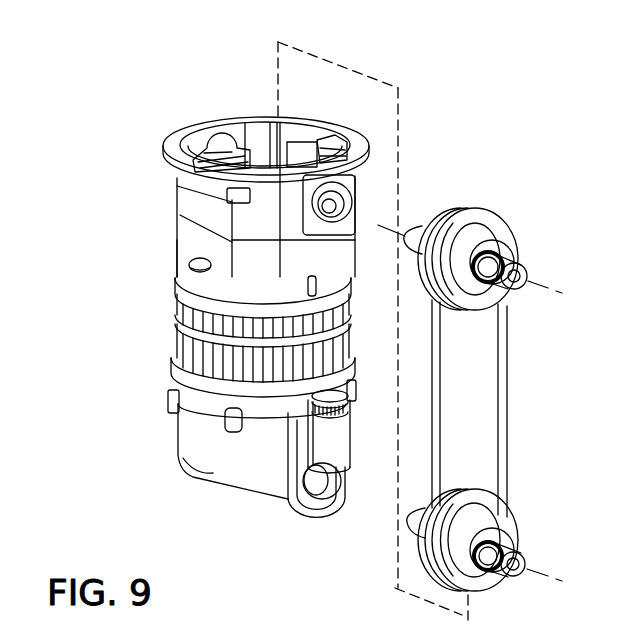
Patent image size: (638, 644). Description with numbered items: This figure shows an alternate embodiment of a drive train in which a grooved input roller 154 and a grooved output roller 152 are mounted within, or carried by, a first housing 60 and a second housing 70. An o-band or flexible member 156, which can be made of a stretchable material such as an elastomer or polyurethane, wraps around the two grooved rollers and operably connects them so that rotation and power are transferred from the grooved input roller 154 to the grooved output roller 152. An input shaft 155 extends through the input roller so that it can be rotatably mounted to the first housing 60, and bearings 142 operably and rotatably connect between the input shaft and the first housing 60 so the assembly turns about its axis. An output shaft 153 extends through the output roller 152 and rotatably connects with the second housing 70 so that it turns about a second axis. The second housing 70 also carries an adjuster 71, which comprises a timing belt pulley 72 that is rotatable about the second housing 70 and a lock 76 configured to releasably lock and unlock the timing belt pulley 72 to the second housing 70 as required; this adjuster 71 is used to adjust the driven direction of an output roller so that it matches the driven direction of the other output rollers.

The first housing 60 is at (195, 437).
The second housing 70 is at (212, 214).
The adjuster 71 is at (148, 301).
The timing belt pulley 72 is at (190, 352).
The lock 76 is at (148, 265).
The bearings 142 is at (352, 190).
The grooved output roller 152 is at (478, 218).
The output shaft 153 is at (418, 225).
The grooved input roller 154 is at (508, 516).
The input shaft 155 is at (412, 527).
The o-band or flexible member 156 is at (507, 390).